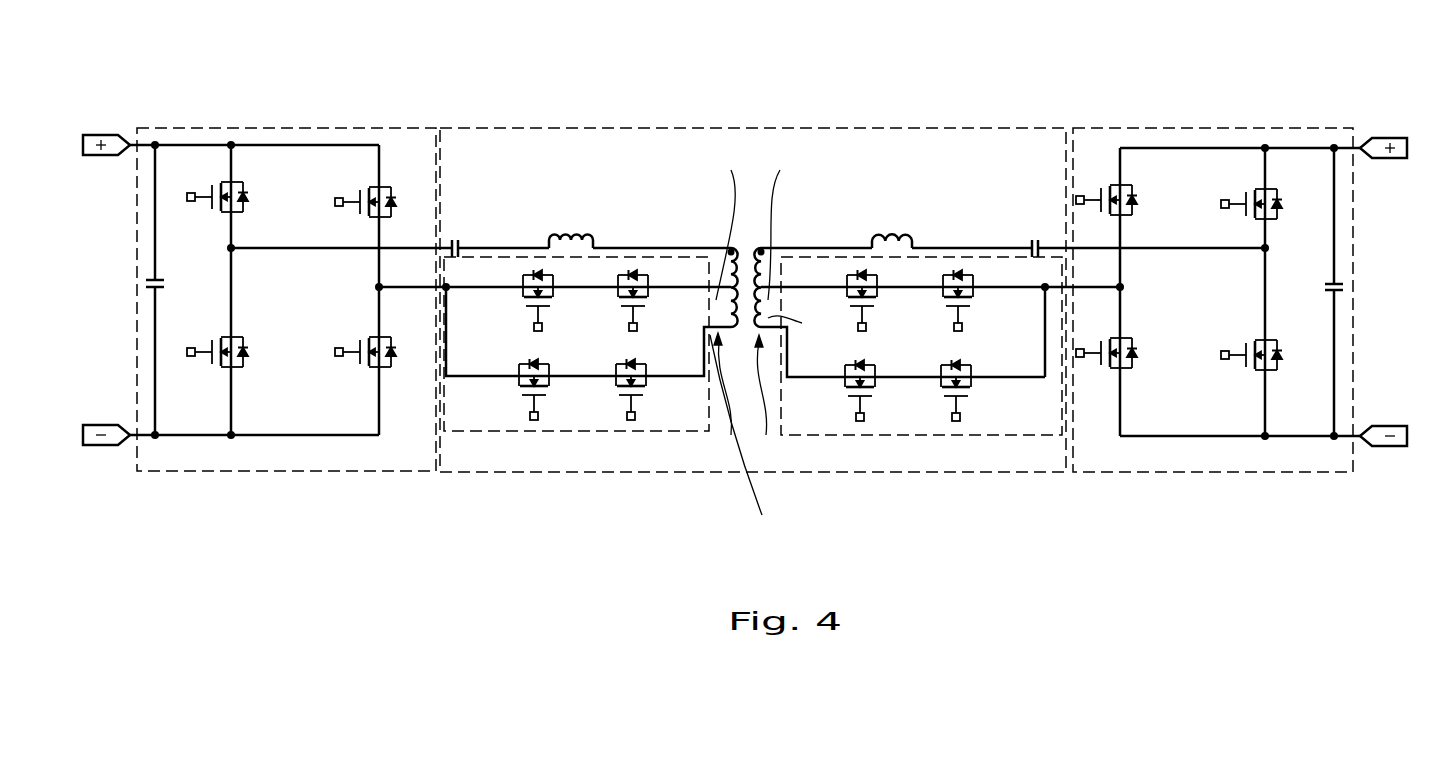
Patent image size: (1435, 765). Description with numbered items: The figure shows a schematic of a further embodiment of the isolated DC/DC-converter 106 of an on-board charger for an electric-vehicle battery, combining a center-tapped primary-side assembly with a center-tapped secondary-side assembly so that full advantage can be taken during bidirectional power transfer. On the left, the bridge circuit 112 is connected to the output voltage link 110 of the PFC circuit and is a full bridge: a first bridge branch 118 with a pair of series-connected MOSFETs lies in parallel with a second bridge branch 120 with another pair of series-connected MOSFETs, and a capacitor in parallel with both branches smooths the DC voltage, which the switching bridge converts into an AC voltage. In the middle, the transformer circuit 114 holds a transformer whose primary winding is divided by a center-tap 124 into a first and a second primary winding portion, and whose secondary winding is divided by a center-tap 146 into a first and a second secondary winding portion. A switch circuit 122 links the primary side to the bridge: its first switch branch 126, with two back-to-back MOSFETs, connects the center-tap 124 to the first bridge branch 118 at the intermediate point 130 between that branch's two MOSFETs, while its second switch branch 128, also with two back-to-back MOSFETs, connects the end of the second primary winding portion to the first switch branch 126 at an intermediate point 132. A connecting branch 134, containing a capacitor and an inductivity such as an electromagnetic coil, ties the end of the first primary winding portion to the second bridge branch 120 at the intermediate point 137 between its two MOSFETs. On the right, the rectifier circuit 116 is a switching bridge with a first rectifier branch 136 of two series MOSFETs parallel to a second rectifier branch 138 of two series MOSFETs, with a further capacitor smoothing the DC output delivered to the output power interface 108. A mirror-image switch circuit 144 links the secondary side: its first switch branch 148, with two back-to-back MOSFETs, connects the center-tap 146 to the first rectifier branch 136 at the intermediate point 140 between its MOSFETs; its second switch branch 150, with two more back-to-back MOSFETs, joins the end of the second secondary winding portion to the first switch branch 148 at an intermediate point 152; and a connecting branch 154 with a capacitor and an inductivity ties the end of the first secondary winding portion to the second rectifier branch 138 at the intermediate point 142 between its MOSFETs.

The isolated DC/DC-converter 106 is at (176, 83).
The output power interface 108 is at (1393, 158).
The output voltage link 110 is at (92, 156).
The bridge circuit 112 is at (396, 148).
The transformer circuit 114 is at (507, 150).
The rectifier circuit 116 is at (1096, 153).
The first bridge branch 118 is at (368, 150).
The second bridge branch 120 is at (240, 150).
The switch circuit 122 is at (603, 422).
The center-tap 124 is at (716, 268).
The first switch branch 126 is at (472, 285).
The second switch branch 128 is at (482, 378).
The intermediate point 130 is at (379, 288).
The intermediate point 132 is at (443, 286).
The connecting branch 134 is at (612, 247).
The first rectifier branch 136 is at (1122, 165).
The intermediate point 137 is at (235, 252).
The second rectifier branch 138 is at (1265, 168).
The intermediate point 140 is at (1121, 289).
The intermediate point 142 is at (1264, 250).
The switch circuit 144 is at (1013, 413).
The center-tap 146 is at (776, 278).
The first switch branch 148 is at (770, 292).
The second switch branch 150 is at (838, 378).
The intermediate point 152 is at (1044, 290).
The connecting branch 154 is at (938, 247).